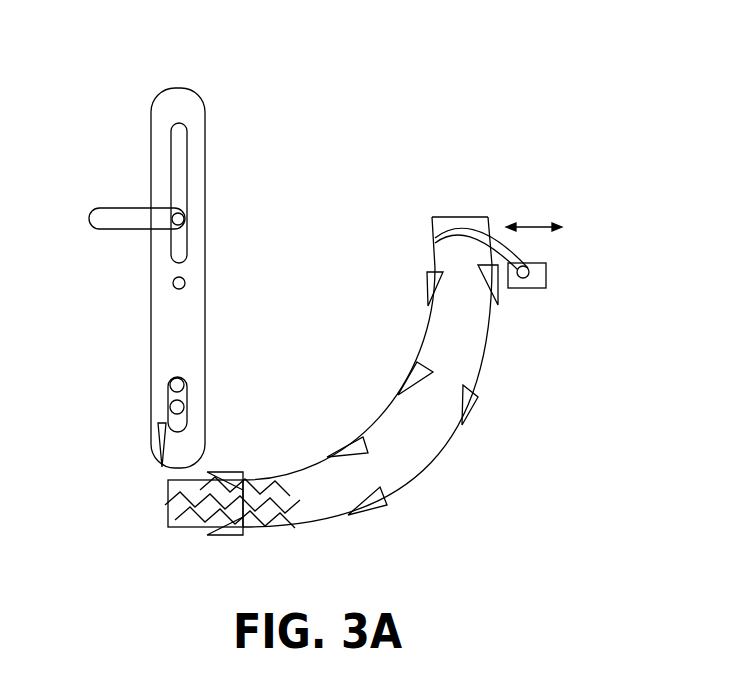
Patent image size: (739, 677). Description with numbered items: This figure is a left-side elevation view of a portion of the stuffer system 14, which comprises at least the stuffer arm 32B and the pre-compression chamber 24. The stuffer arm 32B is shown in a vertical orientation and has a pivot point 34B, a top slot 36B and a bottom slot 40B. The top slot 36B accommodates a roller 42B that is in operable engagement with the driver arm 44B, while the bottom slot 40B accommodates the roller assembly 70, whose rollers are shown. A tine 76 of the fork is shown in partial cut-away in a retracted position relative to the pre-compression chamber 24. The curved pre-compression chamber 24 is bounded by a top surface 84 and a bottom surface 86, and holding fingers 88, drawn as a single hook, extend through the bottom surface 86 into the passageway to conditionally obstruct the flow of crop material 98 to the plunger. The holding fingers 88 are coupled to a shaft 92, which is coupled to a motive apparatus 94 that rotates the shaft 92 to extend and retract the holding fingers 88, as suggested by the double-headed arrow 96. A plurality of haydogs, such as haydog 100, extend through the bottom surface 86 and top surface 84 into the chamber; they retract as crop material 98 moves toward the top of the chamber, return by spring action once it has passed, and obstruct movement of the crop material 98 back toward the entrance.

The stuffer system 14 is at (430, 88).
The pre-compression chamber 24 is at (435, 457).
The stuffer arm 32B is at (203, 98).
The pivot point 34B is at (186, 282).
The top slot 36B is at (186, 148).
The bottom slot 40B is at (183, 422).
The roller 42B is at (184, 218).
The driver arm 44B is at (100, 207).
The roller assembly 70 is at (170, 382).
The tine 76 is at (157, 432).
The top surface 84 is at (432, 335).
The bottom surface 86 is at (485, 365).
The holding fingers 88 is at (465, 227).
The shaft 92 is at (530, 270).
The motive apparatus 94 is at (547, 285).
The double-headed arrow 96 is at (533, 222).
The crop material 98 is at (177, 508).
The haydog 100 is at (415, 370).